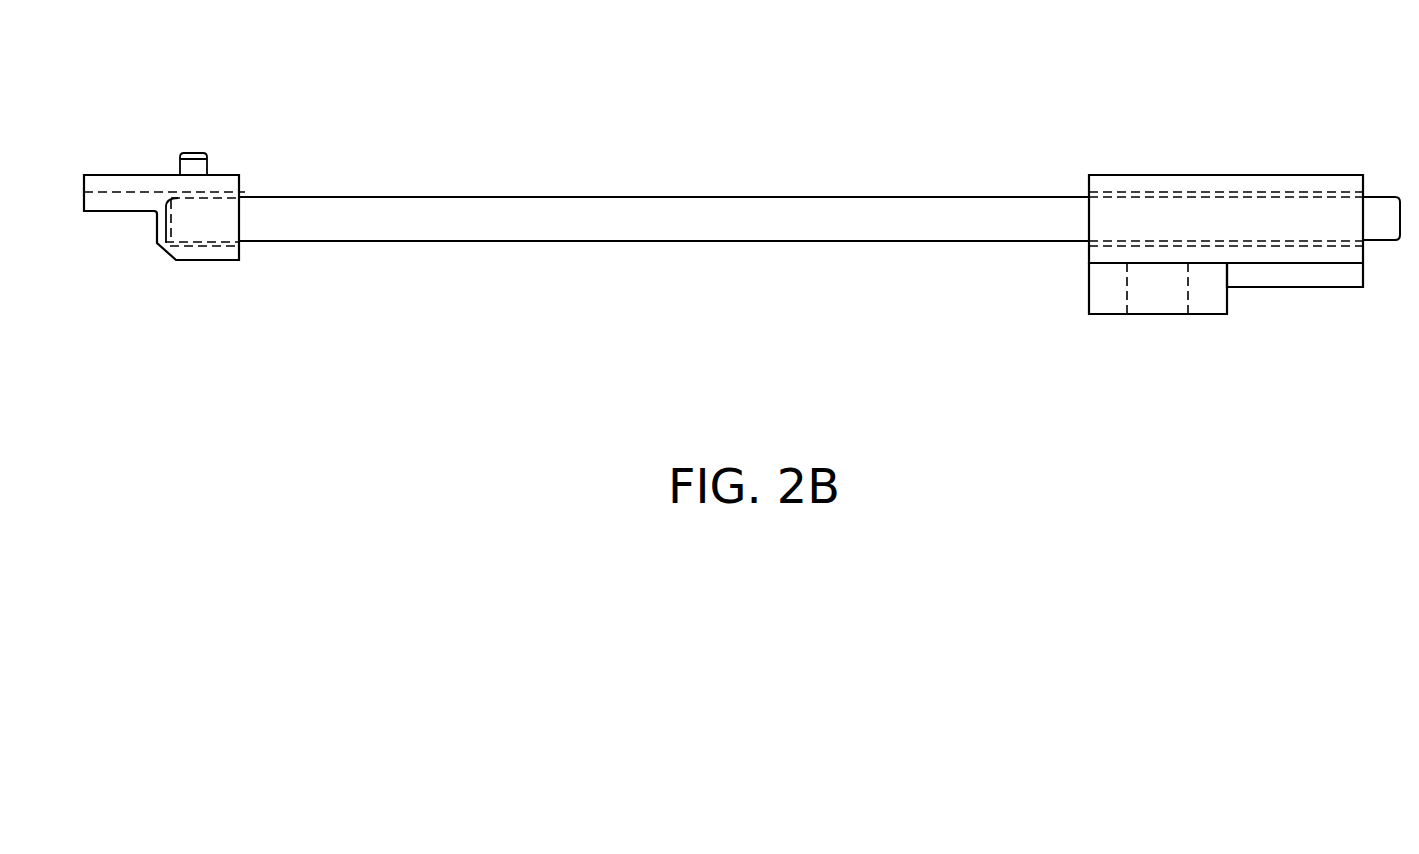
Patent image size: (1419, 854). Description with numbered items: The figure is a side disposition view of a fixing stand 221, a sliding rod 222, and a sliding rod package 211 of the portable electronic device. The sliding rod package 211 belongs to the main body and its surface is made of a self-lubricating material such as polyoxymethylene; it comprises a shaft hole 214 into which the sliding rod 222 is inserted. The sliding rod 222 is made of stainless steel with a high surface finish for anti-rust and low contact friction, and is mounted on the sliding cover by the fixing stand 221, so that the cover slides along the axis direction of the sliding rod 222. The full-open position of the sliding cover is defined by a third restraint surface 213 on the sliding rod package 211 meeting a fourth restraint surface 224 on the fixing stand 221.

The sliding rod package 211 is at (1222, 171).
The third restraint surface 213 is at (1088, 265).
The shaft hole 214 is at (1282, 247).
The fixing stand 221 is at (138, 172).
The sliding rod 222 is at (713, 196).
The fourth restraint surface 224 is at (240, 195).